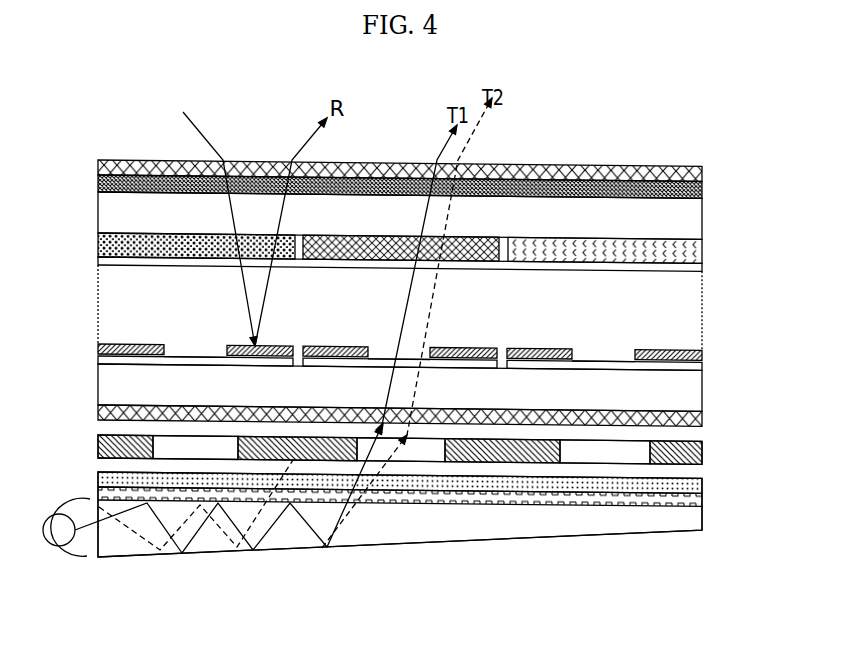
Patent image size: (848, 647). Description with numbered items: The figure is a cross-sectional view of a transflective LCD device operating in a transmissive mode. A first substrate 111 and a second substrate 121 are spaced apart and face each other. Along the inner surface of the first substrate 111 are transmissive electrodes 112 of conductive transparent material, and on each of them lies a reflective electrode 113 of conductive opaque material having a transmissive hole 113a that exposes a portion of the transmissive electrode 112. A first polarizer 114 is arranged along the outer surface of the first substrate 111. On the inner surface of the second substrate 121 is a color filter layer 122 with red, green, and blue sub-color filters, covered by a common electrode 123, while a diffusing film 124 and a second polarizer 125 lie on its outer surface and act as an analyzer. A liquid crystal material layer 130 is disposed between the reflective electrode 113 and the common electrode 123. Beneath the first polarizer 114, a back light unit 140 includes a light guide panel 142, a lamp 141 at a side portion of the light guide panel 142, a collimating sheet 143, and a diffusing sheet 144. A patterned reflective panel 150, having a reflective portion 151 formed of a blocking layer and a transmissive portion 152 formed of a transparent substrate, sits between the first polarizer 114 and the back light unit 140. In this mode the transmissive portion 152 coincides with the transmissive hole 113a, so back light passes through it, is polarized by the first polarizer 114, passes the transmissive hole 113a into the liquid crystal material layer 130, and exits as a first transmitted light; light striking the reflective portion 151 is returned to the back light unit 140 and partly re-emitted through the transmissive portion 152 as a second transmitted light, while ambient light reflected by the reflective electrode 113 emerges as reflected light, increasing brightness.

The first substrate 111 is at (690, 388).
The transmissive electrodes 112 is at (98, 357).
The reflective electrodes 113 is at (125, 344).
The transmissive hole 113a is at (184, 340).
The first polarizer 114 is at (703, 418).
The second substrate 121 is at (688, 212).
The color filter layer 122 is at (222, 258).
The common electrode 123 is at (697, 265).
The diffusing film 124 is at (703, 187).
The second polarizer 125 is at (703, 168).
The liquid crystal material layer 130 is at (688, 317).
The back light unit 140 is at (758, 480).
The lamp 141 is at (60, 547).
The light guide panel 142 is at (481, 530).
The collimating sheet 143 is at (687, 498).
The diffusing sheet 144 is at (703, 483).
The patterned reflective panel 150 is at (88, 435).
The reflective portion 151 is at (136, 459).
The transmissive portion 152 is at (206, 456).